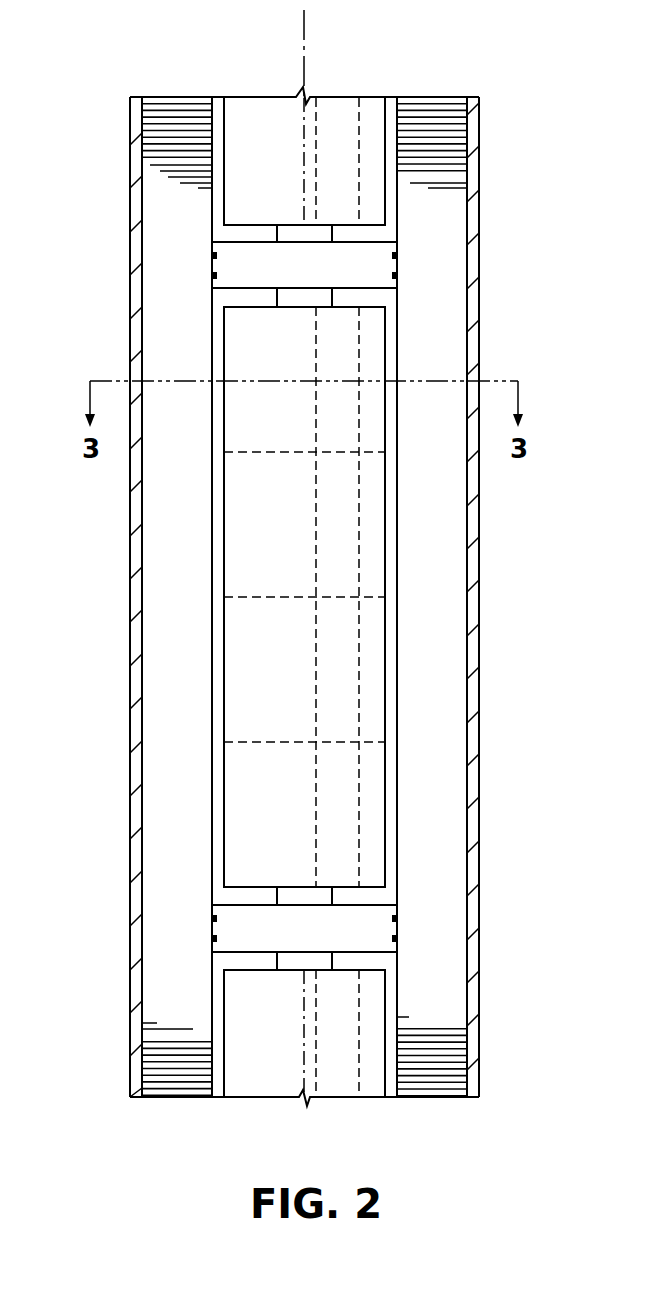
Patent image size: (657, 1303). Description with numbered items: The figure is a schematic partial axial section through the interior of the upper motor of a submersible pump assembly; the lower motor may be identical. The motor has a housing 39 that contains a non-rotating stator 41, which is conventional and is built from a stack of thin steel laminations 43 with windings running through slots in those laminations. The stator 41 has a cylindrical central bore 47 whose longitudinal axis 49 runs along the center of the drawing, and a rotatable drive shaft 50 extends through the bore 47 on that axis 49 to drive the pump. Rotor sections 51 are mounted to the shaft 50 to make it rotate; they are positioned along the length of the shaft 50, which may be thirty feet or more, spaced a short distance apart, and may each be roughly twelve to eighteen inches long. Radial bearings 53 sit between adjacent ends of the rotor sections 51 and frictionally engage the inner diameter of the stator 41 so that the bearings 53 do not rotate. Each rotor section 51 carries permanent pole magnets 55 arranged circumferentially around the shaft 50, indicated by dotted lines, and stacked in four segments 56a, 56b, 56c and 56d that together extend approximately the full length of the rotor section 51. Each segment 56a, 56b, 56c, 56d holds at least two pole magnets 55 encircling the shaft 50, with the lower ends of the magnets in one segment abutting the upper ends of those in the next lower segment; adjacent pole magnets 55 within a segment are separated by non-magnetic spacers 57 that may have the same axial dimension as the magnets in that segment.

The housing 39 is at (136, 636).
The stator 41 is at (153, 170).
The laminations 43 is at (163, 122).
The central bore 47 is at (390, 308).
The longitudinal axis 49 is at (306, 23).
The drive shaft 50 is at (288, 233).
The rotor sections 51 is at (215, 552).
The radial bearings 53 is at (232, 929).
The permanent pole magnets 55 is at (238, 322).
The first segment 56a is at (248, 355).
The second segment 56b is at (245, 503).
The third segment 56c is at (243, 675).
The fourth segment 56d is at (243, 800).
The non-magnetic spacers 57 is at (343, 352).